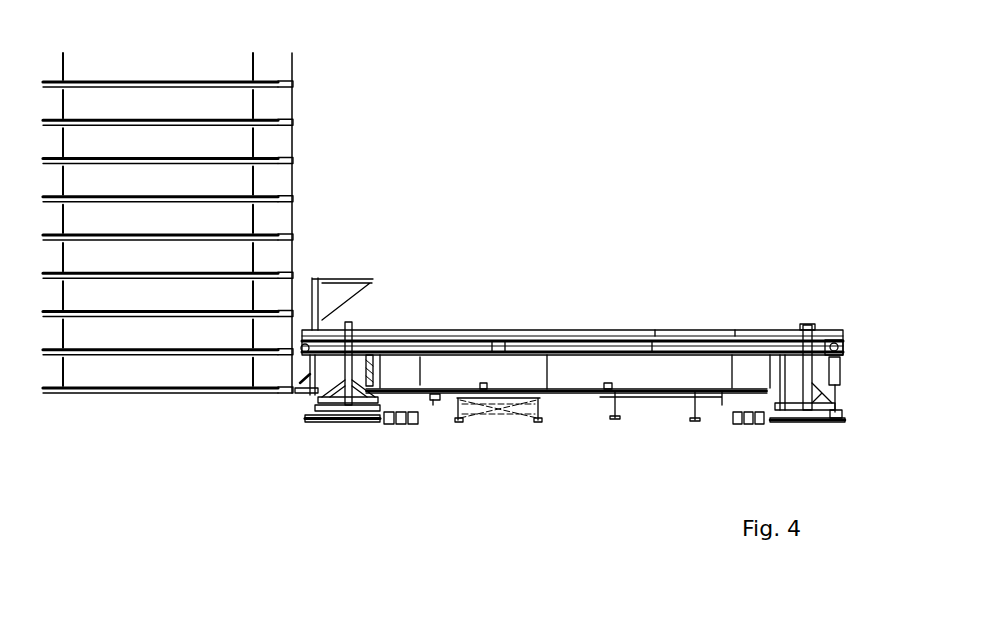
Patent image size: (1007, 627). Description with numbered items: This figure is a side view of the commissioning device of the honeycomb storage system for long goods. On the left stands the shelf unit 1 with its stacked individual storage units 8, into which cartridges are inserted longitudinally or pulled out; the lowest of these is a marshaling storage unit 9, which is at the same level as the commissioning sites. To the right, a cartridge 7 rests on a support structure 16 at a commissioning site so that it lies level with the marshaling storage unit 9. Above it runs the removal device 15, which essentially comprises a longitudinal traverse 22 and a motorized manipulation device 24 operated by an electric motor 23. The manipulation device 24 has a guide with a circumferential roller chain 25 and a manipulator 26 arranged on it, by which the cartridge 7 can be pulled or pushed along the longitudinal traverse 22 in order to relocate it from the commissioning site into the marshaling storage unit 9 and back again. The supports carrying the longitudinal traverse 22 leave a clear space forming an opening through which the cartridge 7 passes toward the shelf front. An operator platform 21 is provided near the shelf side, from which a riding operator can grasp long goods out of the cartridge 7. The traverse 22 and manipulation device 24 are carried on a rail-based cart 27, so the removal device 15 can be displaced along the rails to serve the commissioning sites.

The first shelf unit 1 is at (340, 60).
The storage units 8 is at (278, 112).
The marshaling storage units 9 is at (120, 373).
The operator platforms 21 is at (322, 326).
The longitudinal traverse 22 is at (592, 335).
The manipulation device 24 is at (688, 336).
The removal device 15 is at (752, 335).
The electric motor 23 is at (842, 362).
The circumferential roller chain 25 is at (318, 390).
The rail-based cart 27 is at (343, 412).
The cartridge 7 is at (408, 390).
The support structure 16 is at (470, 405).
The manipulator 26 is at (783, 418).